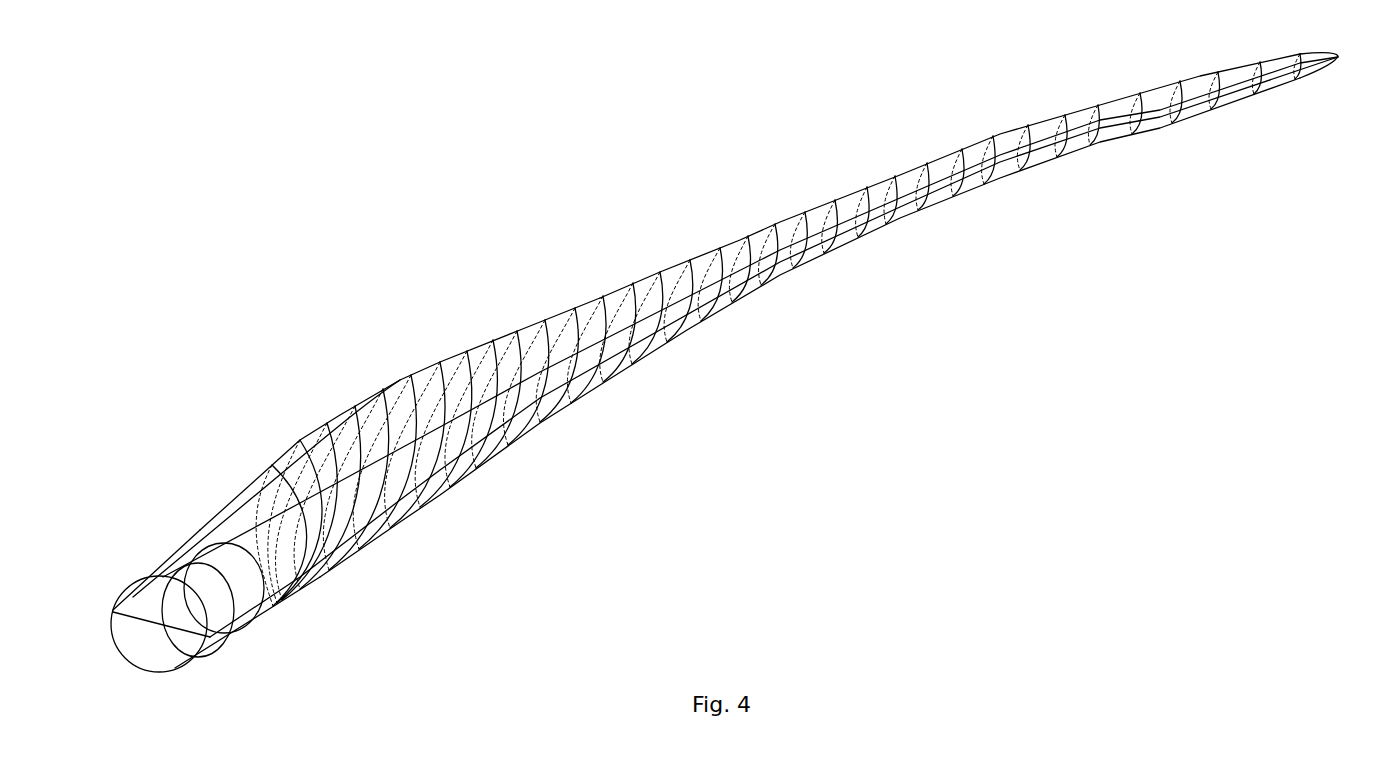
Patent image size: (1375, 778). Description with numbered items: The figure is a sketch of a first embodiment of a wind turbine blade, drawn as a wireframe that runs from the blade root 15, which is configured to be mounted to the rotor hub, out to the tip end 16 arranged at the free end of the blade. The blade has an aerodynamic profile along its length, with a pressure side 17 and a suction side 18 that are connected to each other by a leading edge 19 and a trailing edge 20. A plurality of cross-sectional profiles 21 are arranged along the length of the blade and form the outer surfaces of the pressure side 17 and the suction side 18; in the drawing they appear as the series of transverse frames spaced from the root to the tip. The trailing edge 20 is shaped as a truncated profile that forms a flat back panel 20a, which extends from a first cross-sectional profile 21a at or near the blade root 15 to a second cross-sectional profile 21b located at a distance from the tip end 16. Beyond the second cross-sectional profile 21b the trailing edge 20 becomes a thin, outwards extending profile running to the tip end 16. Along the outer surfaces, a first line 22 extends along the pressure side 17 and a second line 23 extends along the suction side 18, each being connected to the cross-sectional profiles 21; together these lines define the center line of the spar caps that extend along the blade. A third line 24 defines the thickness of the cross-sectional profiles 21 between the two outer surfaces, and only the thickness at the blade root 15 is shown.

The blade root 15 is at (127, 637).
The tip end 16 is at (1344, 63).
The pressure side 17 is at (737, 313).
The suction side 18 is at (684, 255).
The leading edge 19 is at (907, 218).
The trailing edge 20 is at (592, 297).
The flat back panel 20a is at (288, 458).
The cross-sectional profiles 21 is at (863, 181).
The first cross-sectional profile 21a is at (466, 343).
The second cross-sectional profile 21b is at (131, 580).
The first line 22 is at (265, 602).
The second line 23 is at (132, 597).
The third line 24 is at (157, 628).